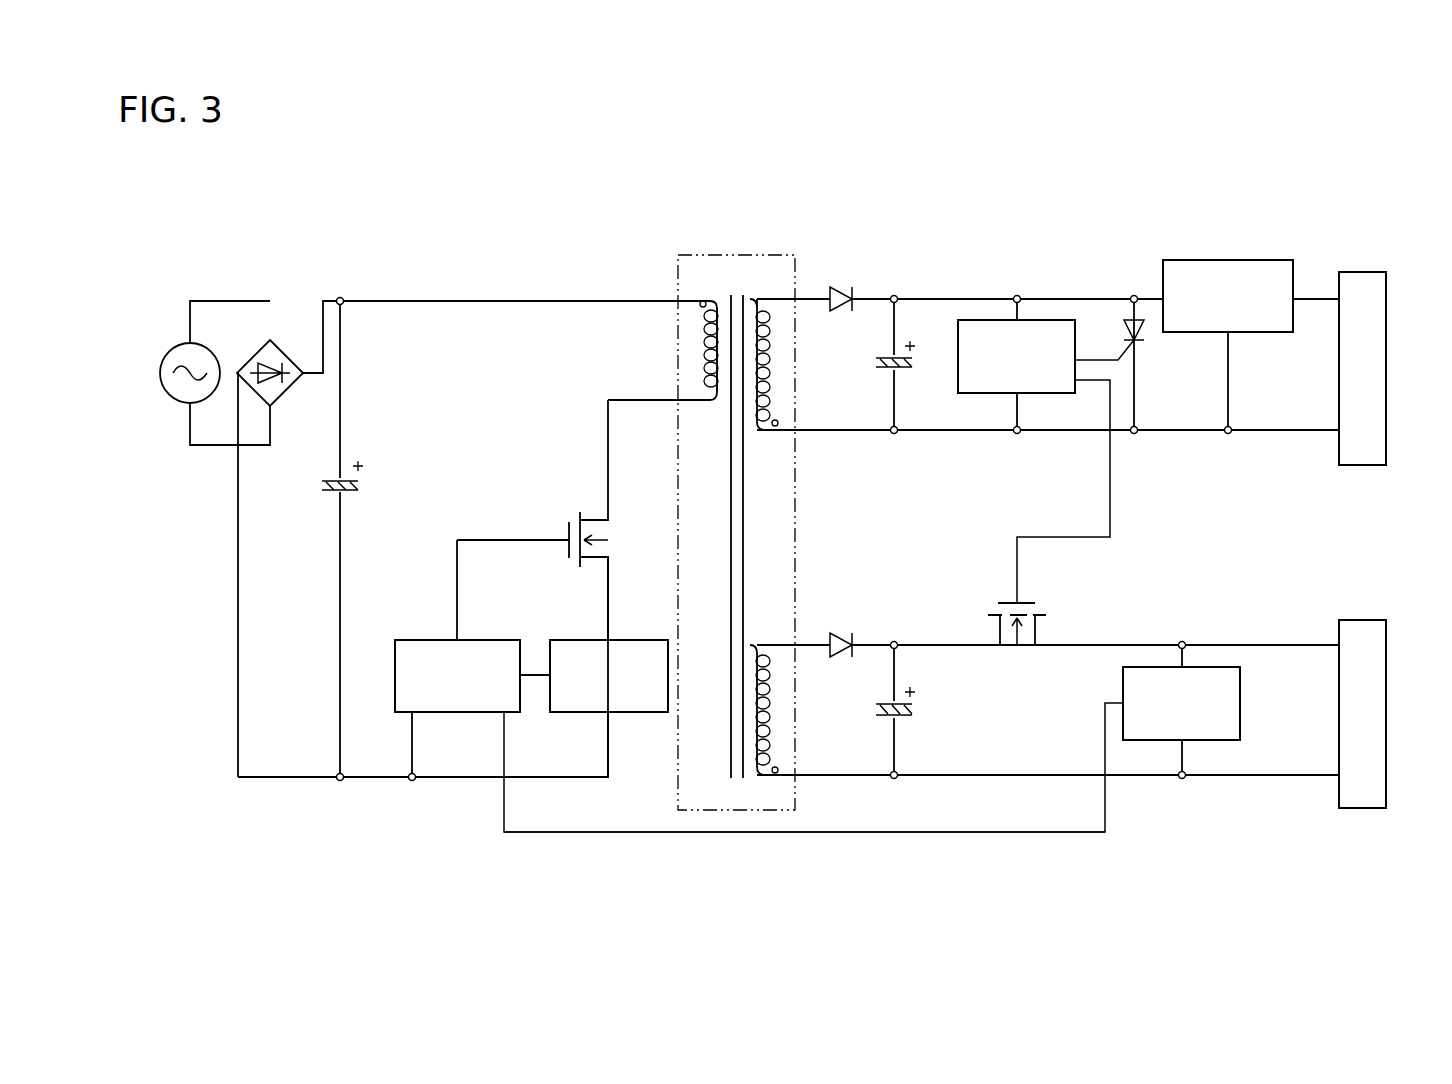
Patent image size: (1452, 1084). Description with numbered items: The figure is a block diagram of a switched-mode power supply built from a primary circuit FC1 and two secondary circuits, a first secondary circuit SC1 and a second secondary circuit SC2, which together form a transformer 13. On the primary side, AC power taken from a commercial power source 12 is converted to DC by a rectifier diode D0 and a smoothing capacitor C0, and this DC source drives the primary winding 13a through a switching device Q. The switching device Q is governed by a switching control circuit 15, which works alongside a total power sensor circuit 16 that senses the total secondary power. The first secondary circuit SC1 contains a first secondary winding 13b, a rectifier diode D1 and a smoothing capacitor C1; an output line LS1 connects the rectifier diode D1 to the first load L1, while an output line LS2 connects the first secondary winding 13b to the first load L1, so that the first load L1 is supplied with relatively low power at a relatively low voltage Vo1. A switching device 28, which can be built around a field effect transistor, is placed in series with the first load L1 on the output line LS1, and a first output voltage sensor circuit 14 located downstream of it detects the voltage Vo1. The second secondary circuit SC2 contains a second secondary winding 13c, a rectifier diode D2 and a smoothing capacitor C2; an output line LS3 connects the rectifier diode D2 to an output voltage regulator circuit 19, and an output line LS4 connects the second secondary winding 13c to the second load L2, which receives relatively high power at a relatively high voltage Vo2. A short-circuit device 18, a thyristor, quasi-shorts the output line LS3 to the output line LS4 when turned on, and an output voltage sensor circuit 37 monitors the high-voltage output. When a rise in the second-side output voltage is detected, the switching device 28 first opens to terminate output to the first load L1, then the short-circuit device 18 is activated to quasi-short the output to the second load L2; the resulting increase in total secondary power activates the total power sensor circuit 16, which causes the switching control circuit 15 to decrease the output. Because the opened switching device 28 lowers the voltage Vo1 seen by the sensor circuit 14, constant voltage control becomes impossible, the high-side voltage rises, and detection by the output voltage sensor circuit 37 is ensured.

The commercial power source 12 is at (173, 350).
The rectifier diode D0 is at (281, 342).
The smoothing capacitor C0 is at (324, 484).
The primary circuit FC1 is at (451, 290).
The switching device Q is at (578, 514).
The switching control circuit 15 is at (427, 640).
The total power sensor circuit 16 is at (578, 640).
The transformer 13 is at (737, 505).
The primary winding 13a is at (710, 350).
The first secondary winding 13b is at (772, 692).
The second secondary winding 13c is at (772, 349).
The rectifier diode D1 is at (840, 636).
The rectifier diode D2 is at (840, 288).
The smoothing capacitor C1 is at (884, 718).
The smoothing capacitor C2 is at (886, 373).
The output voltage sensor circuit 37 is at (980, 393).
The second secondary circuit SC2 is at (1006, 286).
The first secondary circuit SC1 is at (1060, 848).
The short-circuit device 18 is at (1148, 336).
The output voltage regulator circuit 19 is at (1210, 260).
The second load L2 is at (1358, 272).
The first load L1 is at (1358, 620).
The output voltage Vo2 is at (1316, 287).
The output voltage Vo1 is at (1289, 632).
The output line LS1 is at (1143, 644).
The output line LS2 is at (1172, 778).
The output line LS3 is at (1094, 296).
The output line LS4 is at (1192, 433).
The switching device 28 is at (1017, 651).
The first output voltage sensor circuit 14 is at (1240, 690).